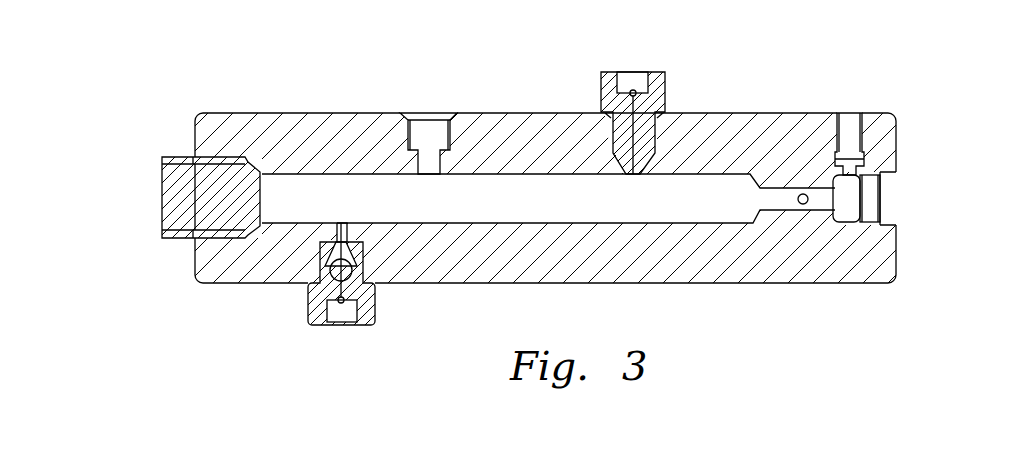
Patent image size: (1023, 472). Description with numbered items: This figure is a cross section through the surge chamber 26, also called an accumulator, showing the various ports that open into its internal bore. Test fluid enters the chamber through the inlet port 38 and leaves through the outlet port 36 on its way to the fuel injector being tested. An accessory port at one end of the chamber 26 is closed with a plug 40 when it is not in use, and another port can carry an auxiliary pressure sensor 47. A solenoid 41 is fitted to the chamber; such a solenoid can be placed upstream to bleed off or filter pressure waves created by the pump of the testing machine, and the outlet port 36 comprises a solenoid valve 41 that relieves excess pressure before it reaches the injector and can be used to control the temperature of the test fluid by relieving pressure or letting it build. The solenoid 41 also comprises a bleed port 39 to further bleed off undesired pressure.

The surge chamber 26 is at (763, 113).
The outlet port 36 is at (665, 108).
The inlet port 38 is at (373, 305).
The bleed port 39 is at (849, 113).
The plug 40 is at (162, 200).
The solenoid 41 is at (898, 200).
The auxiliary pressure sensor 47 is at (428, 113).